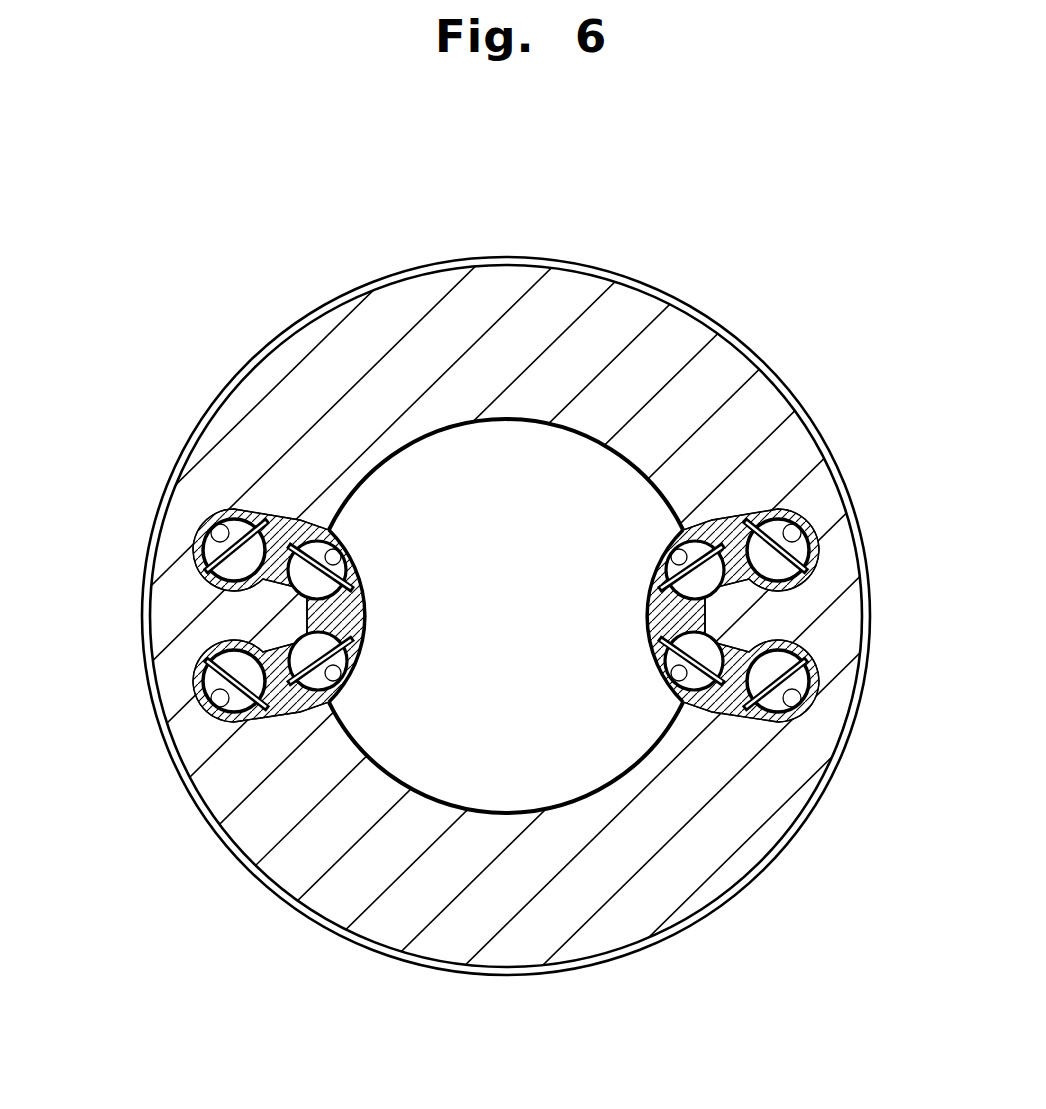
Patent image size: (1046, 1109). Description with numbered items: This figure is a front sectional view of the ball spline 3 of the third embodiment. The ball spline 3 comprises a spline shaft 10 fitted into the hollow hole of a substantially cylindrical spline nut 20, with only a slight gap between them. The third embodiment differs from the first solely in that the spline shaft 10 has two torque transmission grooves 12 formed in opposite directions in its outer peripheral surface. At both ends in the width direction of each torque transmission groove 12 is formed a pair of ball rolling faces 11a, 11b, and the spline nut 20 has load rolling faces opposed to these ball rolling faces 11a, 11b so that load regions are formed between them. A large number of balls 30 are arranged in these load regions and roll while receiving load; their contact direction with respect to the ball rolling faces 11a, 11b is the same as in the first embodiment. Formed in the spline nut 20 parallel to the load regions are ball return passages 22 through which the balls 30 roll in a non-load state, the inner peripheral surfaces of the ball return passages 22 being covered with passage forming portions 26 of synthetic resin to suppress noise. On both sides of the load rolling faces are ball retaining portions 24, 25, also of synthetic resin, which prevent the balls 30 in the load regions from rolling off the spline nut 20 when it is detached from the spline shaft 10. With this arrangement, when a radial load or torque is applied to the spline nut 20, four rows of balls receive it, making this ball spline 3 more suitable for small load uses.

The ball spline 3 is at (650, 247).
The spline nut 20 is at (515, 256).
The spline shaft 10 is at (525, 628).
The ball retaining portion 25 is at (308, 522).
The passage forming portion 26 is at (230, 508).
The ball return passage 22 is at (196, 537).
The ball 30 is at (95, 613).
The ball rolling face 11a is at (348, 672).
The ball rolling face 11b is at (348, 563).
The torque transmission groove 12 is at (362, 616).
The ball retaining portion 24 is at (352, 638).